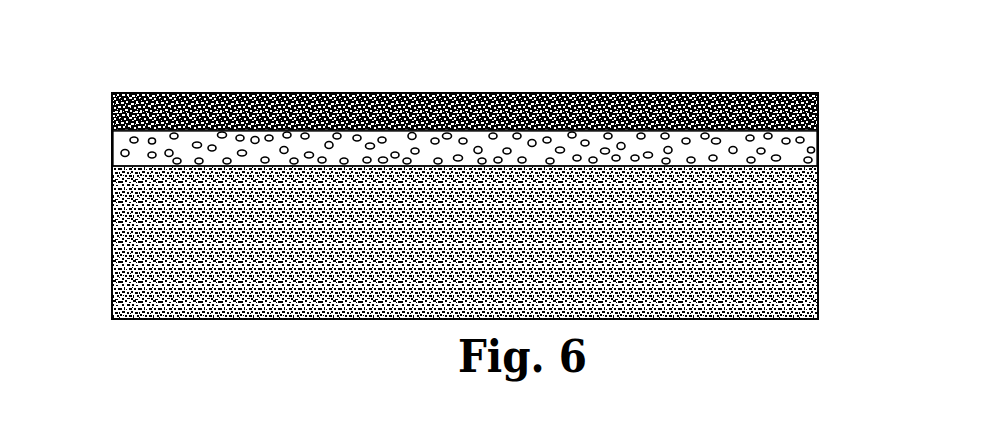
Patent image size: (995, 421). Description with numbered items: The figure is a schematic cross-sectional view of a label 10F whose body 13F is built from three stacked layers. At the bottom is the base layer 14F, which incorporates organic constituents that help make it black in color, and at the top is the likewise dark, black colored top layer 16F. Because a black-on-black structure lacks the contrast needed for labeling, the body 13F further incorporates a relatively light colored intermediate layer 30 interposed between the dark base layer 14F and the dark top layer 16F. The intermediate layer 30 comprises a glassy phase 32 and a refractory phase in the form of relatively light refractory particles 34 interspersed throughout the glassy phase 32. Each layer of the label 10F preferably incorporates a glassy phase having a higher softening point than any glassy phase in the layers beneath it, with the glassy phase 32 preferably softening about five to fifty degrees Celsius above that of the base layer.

The label 10F is at (451, 191).
The body 13F is at (451, 203).
The base layer 14F is at (318, 300).
The top layer 16F is at (762, 115).
The intermediate layer 30 is at (495, 116).
The glassy phase 32 is at (188, 135).
The refractory particles 34 is at (495, 138).